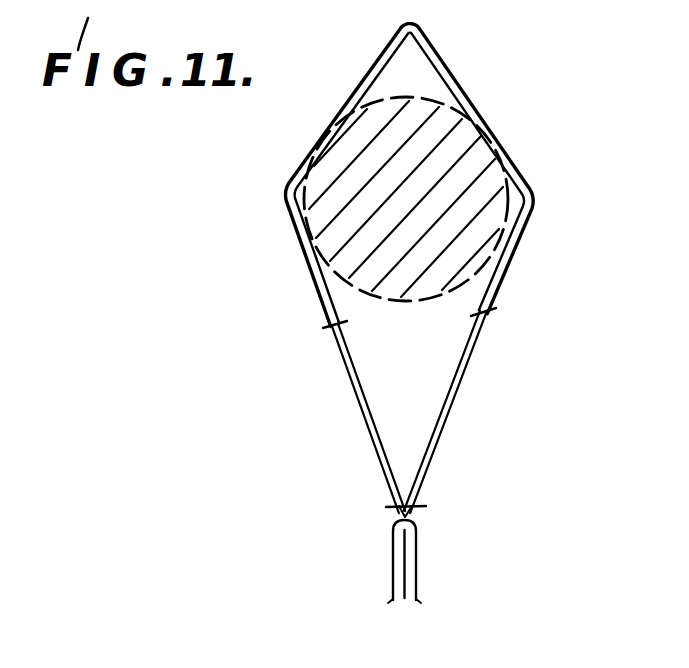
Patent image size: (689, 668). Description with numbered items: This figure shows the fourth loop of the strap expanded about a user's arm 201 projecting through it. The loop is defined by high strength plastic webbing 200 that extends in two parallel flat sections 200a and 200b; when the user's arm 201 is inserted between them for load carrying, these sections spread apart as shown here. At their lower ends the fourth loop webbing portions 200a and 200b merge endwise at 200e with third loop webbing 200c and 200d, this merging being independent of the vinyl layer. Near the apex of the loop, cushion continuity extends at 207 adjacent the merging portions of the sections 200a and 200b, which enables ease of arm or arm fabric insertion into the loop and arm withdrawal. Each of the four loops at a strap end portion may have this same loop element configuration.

The high strength plastic webbing 200 is at (374, 313).
The webbing section 200a is at (360, 412).
The webbing section 200b is at (467, 356).
The third loop webbing 200c is at (392, 577).
The third loop webbing 200d is at (417, 585).
The merging location 200e is at (421, 512).
The user's arm 201 is at (370, 228).
The cushion continuity 207 is at (411, 38).